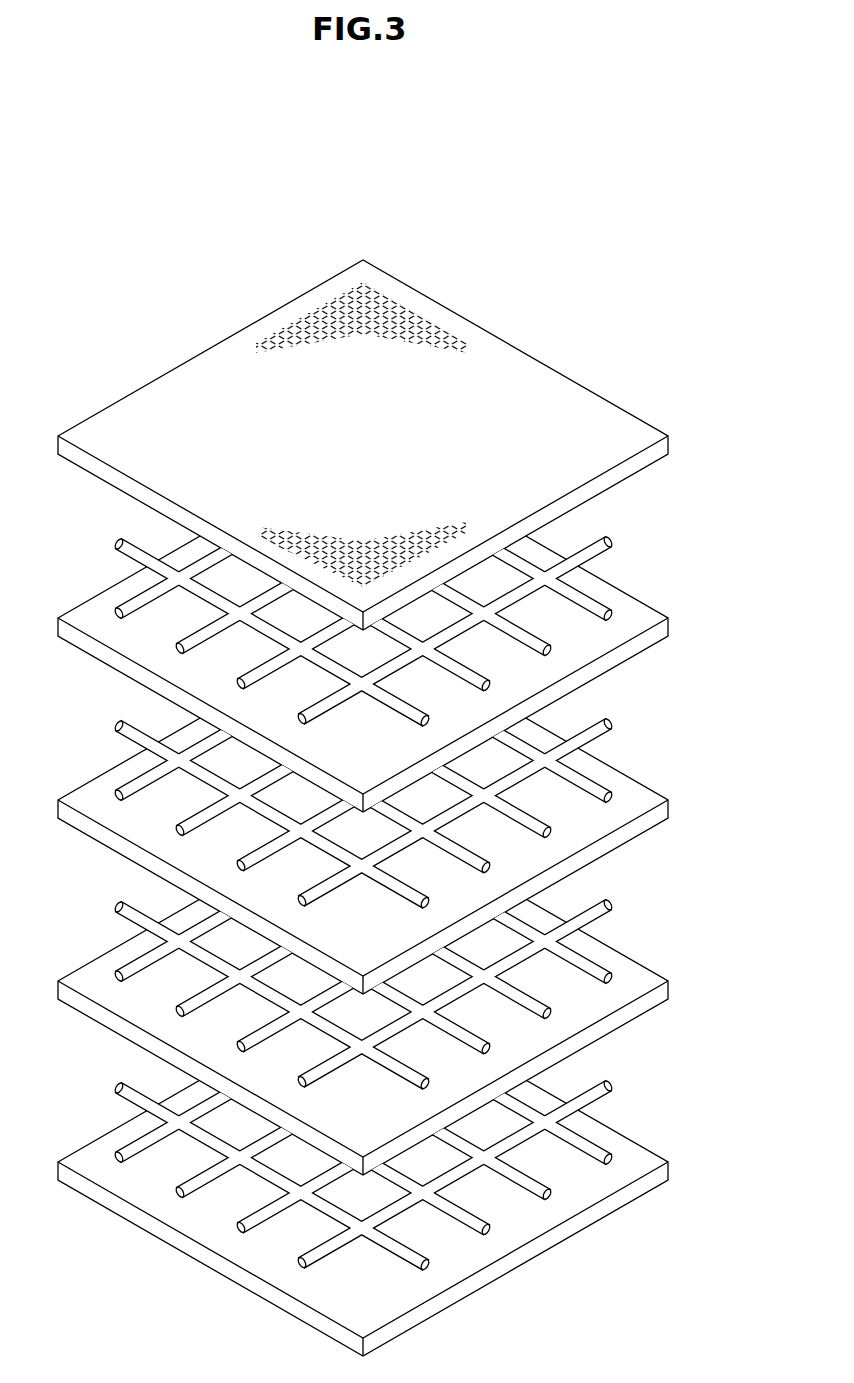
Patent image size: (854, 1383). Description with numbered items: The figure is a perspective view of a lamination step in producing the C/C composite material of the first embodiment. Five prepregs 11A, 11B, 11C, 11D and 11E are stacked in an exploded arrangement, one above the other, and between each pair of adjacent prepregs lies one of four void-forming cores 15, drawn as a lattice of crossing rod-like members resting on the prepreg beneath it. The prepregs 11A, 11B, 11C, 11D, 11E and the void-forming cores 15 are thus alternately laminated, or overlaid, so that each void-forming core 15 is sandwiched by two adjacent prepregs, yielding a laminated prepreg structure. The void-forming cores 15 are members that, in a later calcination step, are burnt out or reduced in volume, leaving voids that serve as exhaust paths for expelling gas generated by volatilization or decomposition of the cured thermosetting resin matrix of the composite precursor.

The prepreg 11A is at (668, 438).
The prepreg 11B is at (668, 620).
The prepreg 11C is at (668, 802).
The prepreg 11D is at (668, 983).
The prepreg 11E is at (668, 1164).
The void-forming core 15 is at (608, 537).